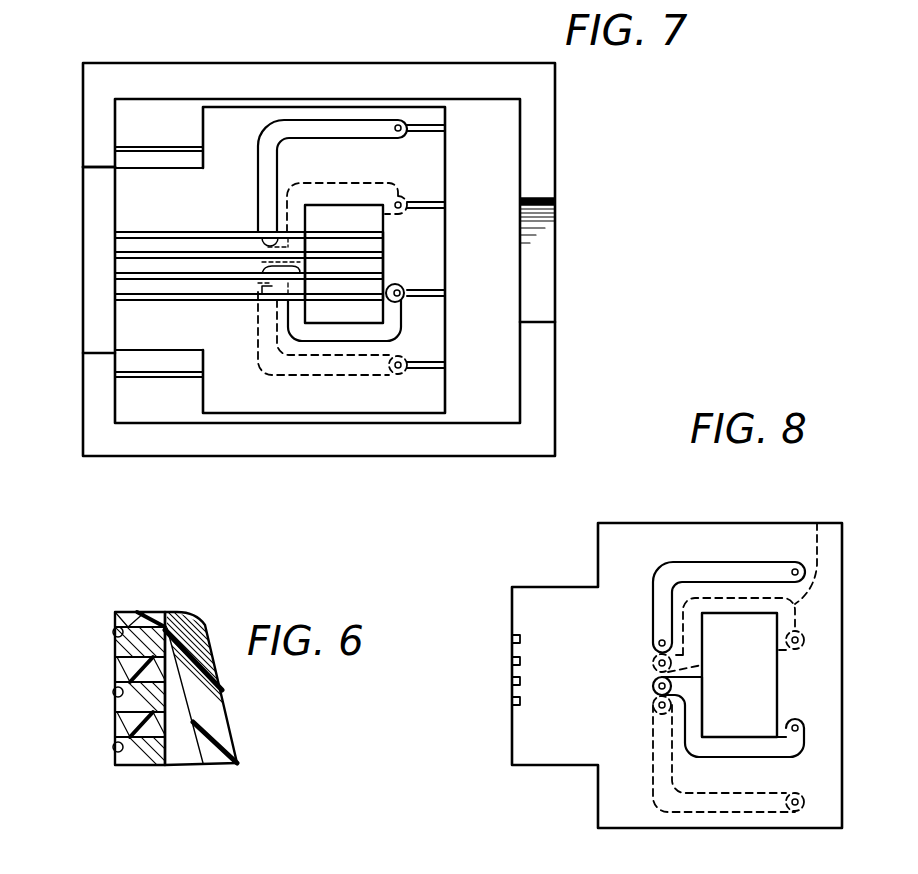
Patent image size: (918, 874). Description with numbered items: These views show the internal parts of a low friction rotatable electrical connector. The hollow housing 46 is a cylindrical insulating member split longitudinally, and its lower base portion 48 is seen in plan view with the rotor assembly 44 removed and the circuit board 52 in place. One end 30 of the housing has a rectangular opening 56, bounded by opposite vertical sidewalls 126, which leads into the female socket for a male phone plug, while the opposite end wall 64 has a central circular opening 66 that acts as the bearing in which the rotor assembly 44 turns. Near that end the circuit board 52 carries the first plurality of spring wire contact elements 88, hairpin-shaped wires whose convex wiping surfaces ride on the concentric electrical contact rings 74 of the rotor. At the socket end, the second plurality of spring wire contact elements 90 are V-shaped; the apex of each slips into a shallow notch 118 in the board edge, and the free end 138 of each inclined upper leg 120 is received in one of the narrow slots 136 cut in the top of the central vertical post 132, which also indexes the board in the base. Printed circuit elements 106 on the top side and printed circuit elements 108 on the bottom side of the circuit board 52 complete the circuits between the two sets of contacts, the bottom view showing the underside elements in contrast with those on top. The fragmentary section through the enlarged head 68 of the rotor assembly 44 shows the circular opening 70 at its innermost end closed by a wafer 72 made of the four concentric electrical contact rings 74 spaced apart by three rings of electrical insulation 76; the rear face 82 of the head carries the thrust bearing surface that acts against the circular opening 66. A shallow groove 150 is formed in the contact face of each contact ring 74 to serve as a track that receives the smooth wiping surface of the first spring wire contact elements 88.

In FIG. 7, the end of housing 30 is at (83, 117).
In FIG. 6, the rotor assembly 44 is at (238, 763).
In FIG. 7, the hollow housing 46 is at (440, 64).
In FIG. 7, the lower base portion 48 is at (237, 63).
In FIG. 7, the circuit board 52 is at (238, 208).
In FIG. 8, the circuit board 52 is at (608, 673).
In FIG. 7, the rectangular opening 56 is at (100, 170).
In FIG. 7, the end wall 64 is at (557, 404).
In FIG. 7, the central circular opening 66 is at (540, 293).
In FIG. 6, the enlarged head 68 is at (201, 627).
In FIG. 6, the circular opening 70 is at (135, 620).
In FIG. 6, the wafer 72 is at (115, 762).
In FIG. 6, the concentric electrical contact rings 74 is at (128, 640).
In FIG. 6, the rings of electrical insulation 76 is at (118, 675).
In FIG. 6, the rear face 82 is at (228, 737).
In FIG. 7, the first plurality of spring wire contact elements 88 is at (445, 365).
In FIG. 7, the second plurality of spring wire contact elements 90 is at (235, 302).
In FIG. 7, the printed circuit elements 106 is at (317, 128).
In FIG. 8, the printed circuit elements 106 is at (817, 523).
In FIG. 8, the printed circuit elements 108 is at (716, 570).
In FIG. 8, the shallow notch 118 is at (512, 639).
In FIG. 7, the upper leg 120 is at (190, 302).
In FIG. 7, the vertical sidewalls 126 is at (163, 170).
In FIG. 7, the central vertical post 132 is at (360, 325).
In FIG. 7, the slots 136 is at (358, 235).
In FIG. 7, the free end 138 is at (322, 235).
In FIG. 6, the shallow groove 150 is at (115, 632).